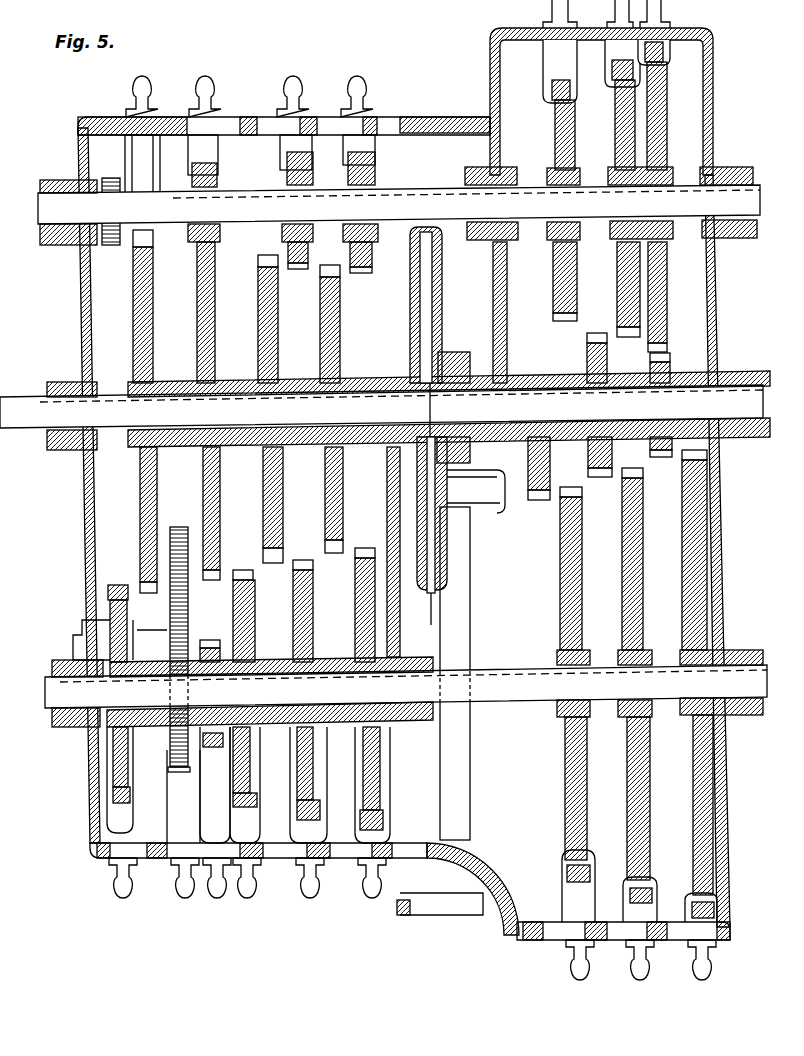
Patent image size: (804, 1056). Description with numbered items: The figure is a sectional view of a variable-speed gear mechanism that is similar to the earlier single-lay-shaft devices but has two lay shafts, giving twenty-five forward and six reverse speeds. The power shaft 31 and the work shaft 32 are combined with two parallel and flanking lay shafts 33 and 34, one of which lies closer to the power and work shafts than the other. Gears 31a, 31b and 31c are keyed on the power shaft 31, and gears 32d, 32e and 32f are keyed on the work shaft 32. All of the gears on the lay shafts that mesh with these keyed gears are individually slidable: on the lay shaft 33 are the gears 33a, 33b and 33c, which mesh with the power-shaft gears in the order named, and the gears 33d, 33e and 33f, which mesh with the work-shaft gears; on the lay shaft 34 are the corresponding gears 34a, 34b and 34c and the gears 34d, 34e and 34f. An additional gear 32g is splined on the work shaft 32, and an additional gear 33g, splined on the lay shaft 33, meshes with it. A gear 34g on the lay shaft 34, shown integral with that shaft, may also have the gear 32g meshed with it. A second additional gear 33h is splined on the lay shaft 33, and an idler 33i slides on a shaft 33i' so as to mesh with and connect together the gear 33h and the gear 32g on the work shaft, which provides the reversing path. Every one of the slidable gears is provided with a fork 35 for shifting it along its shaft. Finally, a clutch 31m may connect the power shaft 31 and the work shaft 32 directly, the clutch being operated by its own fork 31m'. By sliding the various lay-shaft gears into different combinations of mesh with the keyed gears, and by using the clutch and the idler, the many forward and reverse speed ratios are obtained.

The power shaft 31 is at (724, 398).
The gear 31a is at (538, 496).
The gear 31b is at (595, 478).
The gear 31c is at (660, 458).
The clutch 31m is at (451, 426).
The fork 31m' is at (469, 392).
The work shaft 32 is at (32, 400).
The gear 32d is at (345, 518).
The gear 32e is at (284, 527).
The gear 32f is at (222, 520).
The additional gear 32g is at (154, 333).
The lay shaft 33 is at (490, 672).
The gear 33a is at (694, 827).
The gear 33b is at (633, 817).
The gear 33c is at (570, 800).
The gear 33d is at (366, 767).
The gear 33e is at (300, 773).
The gear 33f is at (255, 627).
The additional gear 33g is at (113, 585).
The second additional gear 33h is at (210, 640).
The idler 33i is at (176, 631).
The shaft 33i' is at (150, 629).
The lay shaft 34 is at (415, 187).
The gear 34a is at (557, 140).
The gear 34b is at (618, 133).
The gear 34c is at (668, 283).
The gear 34d is at (362, 274).
The gear 34e is at (292, 270).
The gear 34f is at (216, 262).
The gear 34g is at (112, 247).
The forks 35 is at (150, 82).